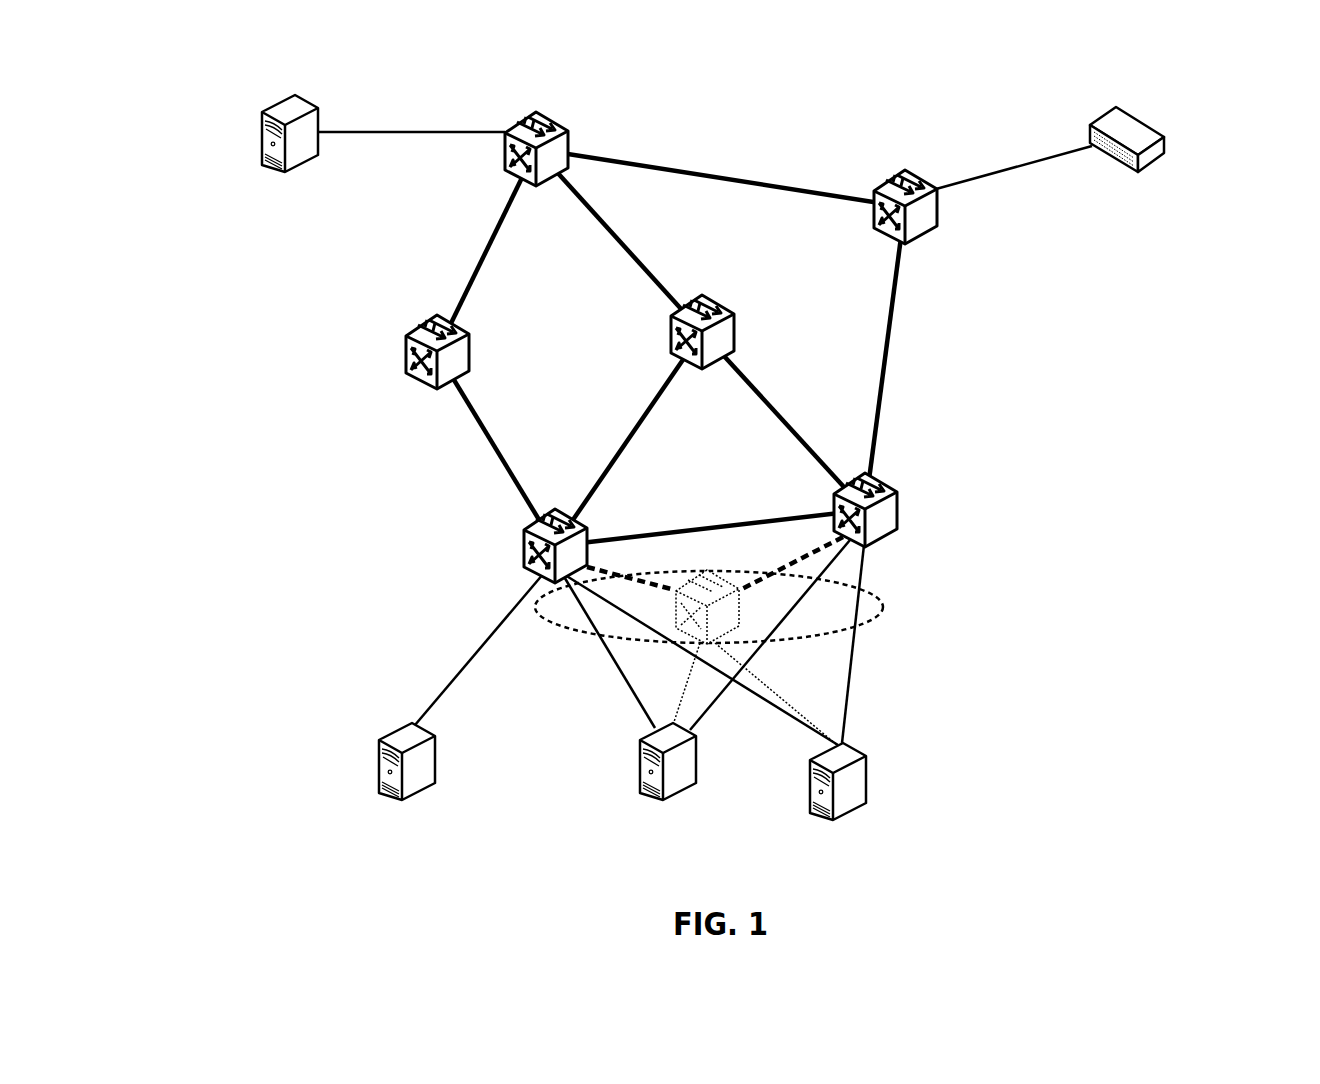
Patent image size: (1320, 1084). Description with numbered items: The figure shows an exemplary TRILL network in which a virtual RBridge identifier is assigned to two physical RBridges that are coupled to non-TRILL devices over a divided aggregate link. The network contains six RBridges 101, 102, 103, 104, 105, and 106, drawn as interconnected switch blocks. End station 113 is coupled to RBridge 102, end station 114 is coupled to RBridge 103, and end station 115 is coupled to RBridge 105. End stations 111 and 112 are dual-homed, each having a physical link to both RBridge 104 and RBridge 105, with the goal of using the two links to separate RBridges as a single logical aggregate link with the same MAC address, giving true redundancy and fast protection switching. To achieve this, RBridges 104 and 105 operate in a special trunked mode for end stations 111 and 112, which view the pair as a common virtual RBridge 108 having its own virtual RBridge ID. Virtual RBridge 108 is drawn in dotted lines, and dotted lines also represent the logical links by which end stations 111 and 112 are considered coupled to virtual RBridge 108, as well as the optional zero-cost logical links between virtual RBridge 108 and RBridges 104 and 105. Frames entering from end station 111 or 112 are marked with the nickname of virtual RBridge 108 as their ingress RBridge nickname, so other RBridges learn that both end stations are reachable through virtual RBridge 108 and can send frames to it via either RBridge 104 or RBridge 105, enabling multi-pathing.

The RBridge 101 is at (497, 348).
The RBridge 102 is at (565, 129).
The RBridge 103 is at (936, 227).
The RBridge 104 is at (897, 510).
The RBridge 105 is at (617, 518).
The RBridge 106 is at (758, 328).
The virtual RBridge 108 is at (740, 620).
The end station 111 is at (652, 796).
The end station 112 is at (862, 800).
The end station 113 is at (300, 172).
The end station 114 is at (1193, 172).
The end station 115 is at (382, 786).